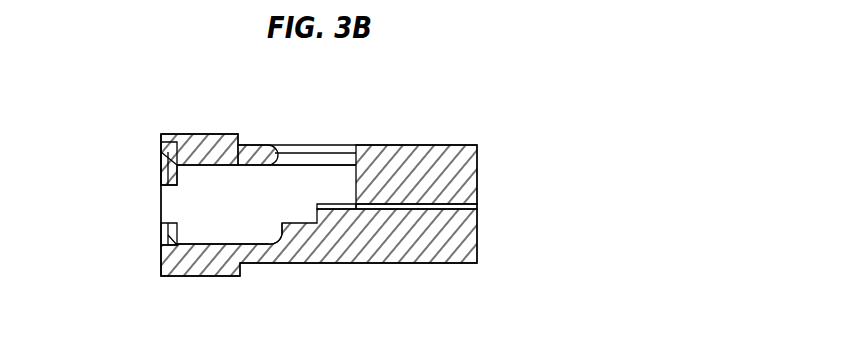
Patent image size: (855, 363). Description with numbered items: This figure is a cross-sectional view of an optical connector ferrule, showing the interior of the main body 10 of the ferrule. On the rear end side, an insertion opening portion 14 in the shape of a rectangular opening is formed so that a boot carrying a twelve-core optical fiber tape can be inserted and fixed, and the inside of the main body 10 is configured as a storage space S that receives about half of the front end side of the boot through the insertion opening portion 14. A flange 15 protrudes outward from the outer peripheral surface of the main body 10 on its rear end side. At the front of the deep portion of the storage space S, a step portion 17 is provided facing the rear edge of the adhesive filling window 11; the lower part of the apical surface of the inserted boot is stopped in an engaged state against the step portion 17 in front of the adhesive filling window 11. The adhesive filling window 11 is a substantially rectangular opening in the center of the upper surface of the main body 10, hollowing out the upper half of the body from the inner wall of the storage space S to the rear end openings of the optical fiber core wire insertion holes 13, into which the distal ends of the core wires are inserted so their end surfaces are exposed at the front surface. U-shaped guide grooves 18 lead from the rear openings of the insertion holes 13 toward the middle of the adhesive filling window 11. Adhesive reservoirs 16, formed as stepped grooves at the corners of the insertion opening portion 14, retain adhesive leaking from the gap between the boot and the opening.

The main body of the ferrule 10 is at (172, 125).
The adhesive filling window 11 is at (355, 146).
The optical fiber core wire insertion holes 13 is at (475, 189).
The insertion opening portion 14 is at (160, 210).
The flange 15 is at (233, 133).
The adhesive reservoirs 16 is at (166, 160).
The step portion 17 is at (270, 248).
The U-shaped guide grooves 18 is at (333, 204).
The storage space S is at (248, 205).